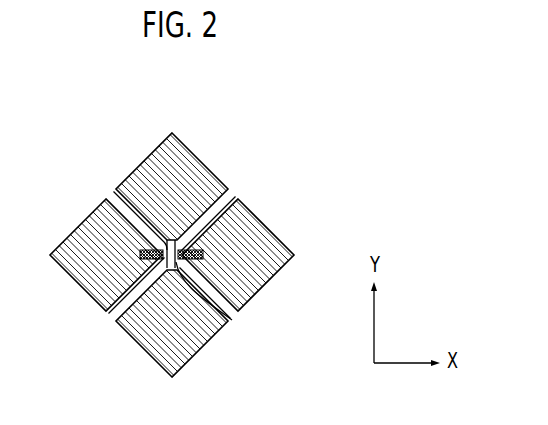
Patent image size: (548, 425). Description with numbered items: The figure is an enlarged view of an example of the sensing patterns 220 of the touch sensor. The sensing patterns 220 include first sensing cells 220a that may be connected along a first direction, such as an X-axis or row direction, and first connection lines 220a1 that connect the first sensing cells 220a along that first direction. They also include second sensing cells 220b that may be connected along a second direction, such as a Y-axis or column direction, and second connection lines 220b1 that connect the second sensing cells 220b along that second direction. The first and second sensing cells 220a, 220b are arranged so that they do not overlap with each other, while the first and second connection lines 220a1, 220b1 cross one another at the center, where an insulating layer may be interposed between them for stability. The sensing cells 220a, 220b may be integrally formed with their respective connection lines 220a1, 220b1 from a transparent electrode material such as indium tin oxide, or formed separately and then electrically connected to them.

The sensing patterns 220 is at (288, 106).
The first sensing cells 220a is at (266, 227).
The first connection lines 220a1 is at (232, 320).
The second sensing cells 220b is at (197, 157).
The second connection lines 220b1 is at (118, 196).